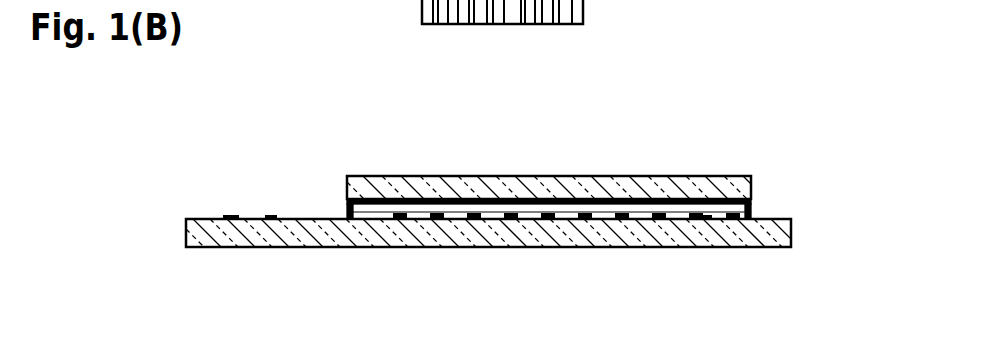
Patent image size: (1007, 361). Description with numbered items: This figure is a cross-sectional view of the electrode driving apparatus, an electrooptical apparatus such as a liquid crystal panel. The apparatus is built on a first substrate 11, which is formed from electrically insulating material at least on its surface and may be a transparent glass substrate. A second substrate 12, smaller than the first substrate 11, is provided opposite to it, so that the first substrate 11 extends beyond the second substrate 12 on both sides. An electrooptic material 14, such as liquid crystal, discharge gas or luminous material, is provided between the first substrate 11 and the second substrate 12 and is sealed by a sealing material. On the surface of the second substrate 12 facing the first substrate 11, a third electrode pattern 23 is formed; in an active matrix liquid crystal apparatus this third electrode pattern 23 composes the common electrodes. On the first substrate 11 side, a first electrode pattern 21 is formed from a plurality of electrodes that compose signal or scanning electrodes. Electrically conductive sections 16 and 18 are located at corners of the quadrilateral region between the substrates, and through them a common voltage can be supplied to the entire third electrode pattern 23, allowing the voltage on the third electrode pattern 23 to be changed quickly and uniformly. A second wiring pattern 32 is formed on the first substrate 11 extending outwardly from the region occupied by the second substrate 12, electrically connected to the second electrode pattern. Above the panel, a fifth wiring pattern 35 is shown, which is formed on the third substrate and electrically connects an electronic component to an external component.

The first substrate 11 is at (792, 232).
The second substrate 12 is at (752, 187).
The electrooptic material 14 is at (642, 210).
The electrically conductive section 16 is at (347, 208).
The electrically conductive section 18 is at (752, 208).
The first electrode pattern 21 is at (705, 220).
The third electrode pattern 23 is at (750, 202).
The second wiring pattern 32 is at (233, 215).
The fifth wiring pattern 35 is at (578, 29).